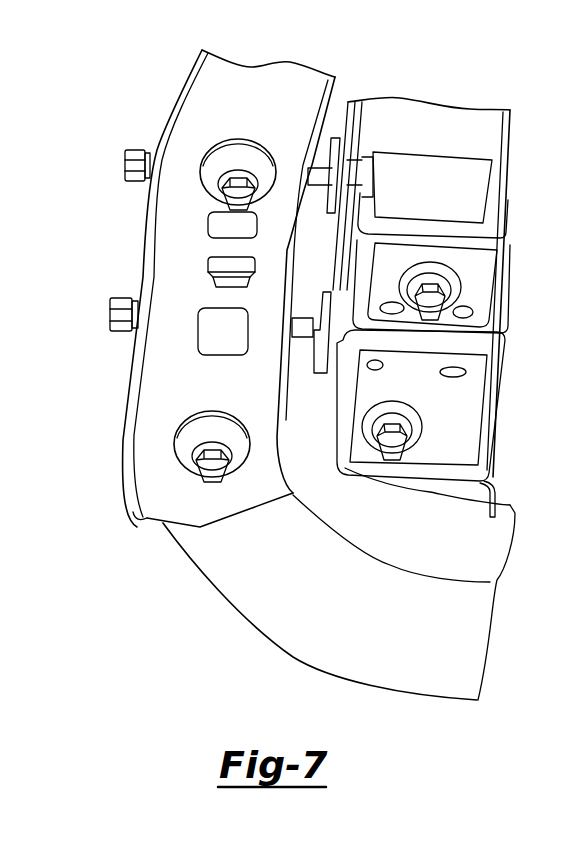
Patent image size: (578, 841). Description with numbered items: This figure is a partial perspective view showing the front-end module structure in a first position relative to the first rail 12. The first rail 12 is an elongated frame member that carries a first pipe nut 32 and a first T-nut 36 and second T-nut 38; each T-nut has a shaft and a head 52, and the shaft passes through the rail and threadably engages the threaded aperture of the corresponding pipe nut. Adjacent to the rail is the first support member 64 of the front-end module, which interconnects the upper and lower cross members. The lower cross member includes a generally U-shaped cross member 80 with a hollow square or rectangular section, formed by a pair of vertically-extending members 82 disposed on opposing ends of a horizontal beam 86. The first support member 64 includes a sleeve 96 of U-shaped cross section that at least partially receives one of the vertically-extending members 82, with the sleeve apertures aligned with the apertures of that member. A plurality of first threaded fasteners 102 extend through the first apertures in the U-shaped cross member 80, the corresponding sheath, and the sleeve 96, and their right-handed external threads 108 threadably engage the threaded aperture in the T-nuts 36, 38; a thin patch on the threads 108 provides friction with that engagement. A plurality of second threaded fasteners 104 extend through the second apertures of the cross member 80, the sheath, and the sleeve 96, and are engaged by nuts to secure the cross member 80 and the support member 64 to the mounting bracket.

The first rail 12 is at (435, 280).
The first pipe nut 32 is at (432, 144).
The first T-nut 36 is at (384, 119).
The second T-nut 38 is at (319, 437).
The head 52 is at (324, 255).
The first support member 64 is at (227, 277).
The U-shaped cross member 80 is at (339, 584).
The vertically-extending members 82 is at (143, 548).
The horizontal beam 86 is at (463, 726).
The sleeve 96 is at (161, 101).
The first threaded fasteners 102 is at (101, 222).
The second threaded fasteners 104 is at (228, 352).
The right-handed external threads 108 is at (282, 249).